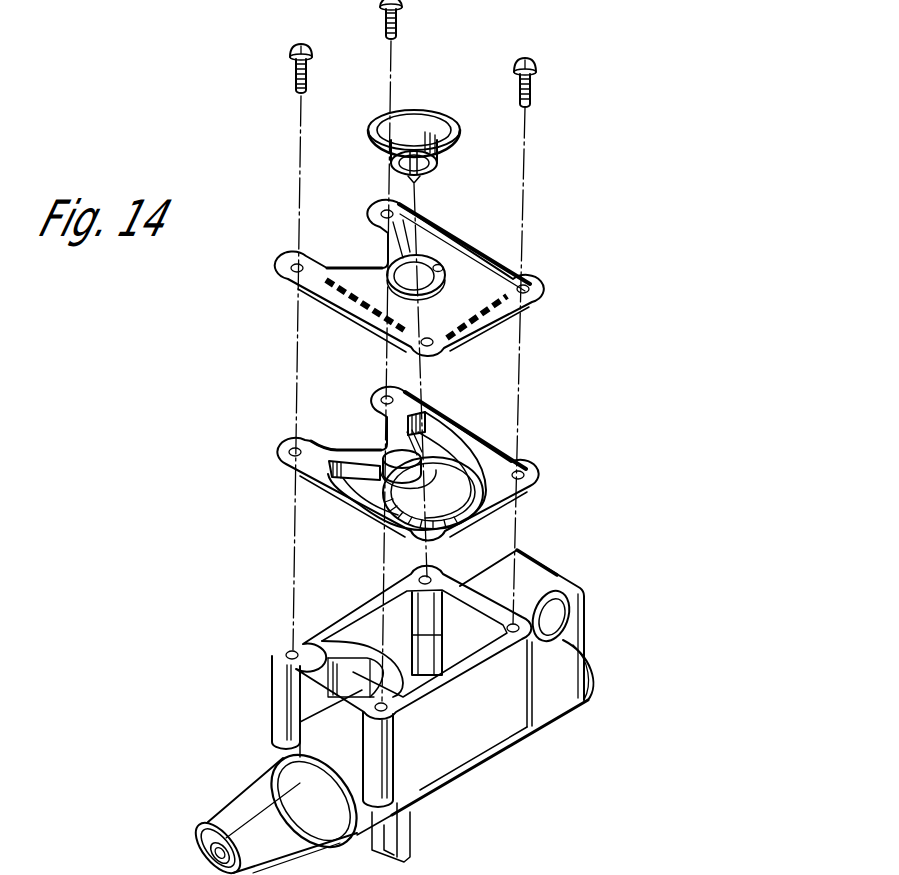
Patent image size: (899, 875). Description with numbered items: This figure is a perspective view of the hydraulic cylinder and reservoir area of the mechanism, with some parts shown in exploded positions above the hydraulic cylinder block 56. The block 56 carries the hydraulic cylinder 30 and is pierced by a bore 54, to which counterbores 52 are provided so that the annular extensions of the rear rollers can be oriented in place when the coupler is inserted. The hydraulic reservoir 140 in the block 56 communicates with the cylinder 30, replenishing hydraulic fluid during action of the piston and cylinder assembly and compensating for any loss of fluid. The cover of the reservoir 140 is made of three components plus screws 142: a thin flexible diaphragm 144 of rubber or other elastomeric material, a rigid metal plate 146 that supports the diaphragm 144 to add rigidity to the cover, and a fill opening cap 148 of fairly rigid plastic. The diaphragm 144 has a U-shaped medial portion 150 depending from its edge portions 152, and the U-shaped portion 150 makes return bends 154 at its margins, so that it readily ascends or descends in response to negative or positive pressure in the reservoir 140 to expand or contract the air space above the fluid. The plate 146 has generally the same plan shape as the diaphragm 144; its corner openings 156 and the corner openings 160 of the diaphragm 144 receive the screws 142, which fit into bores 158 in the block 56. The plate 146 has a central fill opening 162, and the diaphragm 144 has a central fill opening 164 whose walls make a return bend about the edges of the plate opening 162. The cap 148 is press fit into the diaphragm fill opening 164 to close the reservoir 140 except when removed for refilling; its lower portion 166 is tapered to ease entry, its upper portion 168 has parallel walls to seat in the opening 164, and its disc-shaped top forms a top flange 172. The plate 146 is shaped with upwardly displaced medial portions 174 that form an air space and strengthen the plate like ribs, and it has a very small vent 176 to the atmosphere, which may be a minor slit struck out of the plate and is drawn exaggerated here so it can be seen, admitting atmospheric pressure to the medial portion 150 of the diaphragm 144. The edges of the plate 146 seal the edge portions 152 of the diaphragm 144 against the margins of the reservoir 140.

The hydraulic cylinder 30 is at (468, 770).
The counterbores 52 is at (590, 693).
The bore 54 is at (568, 618).
The hydraulic cylinder block 56 is at (548, 572).
The hydraulic reservoir 140 is at (413, 636).
The screws 142 is at (295, 82).
The flexible diaphragm 144 is at (520, 486).
The rigid plate 146 is at (531, 288).
The fill opening cap 148 is at (458, 133).
The U-shaped medial portion 150 is at (365, 508).
The edge portions 152 is at (310, 448).
The return bends 154 is at (340, 468).
The corner openings 156 is at (288, 268).
The bores 158 is at (290, 650).
The corner openings 160 is at (285, 452).
The central fill opening 162 is at (442, 262).
The central fill opening 164 is at (455, 440).
The lower portion 166 is at (420, 140).
The upper portion 168 is at (397, 138).
The top flange 172 is at (446, 124).
The upwardly displaced medial portions 174 is at (482, 272).
The vent 176 is at (483, 318).